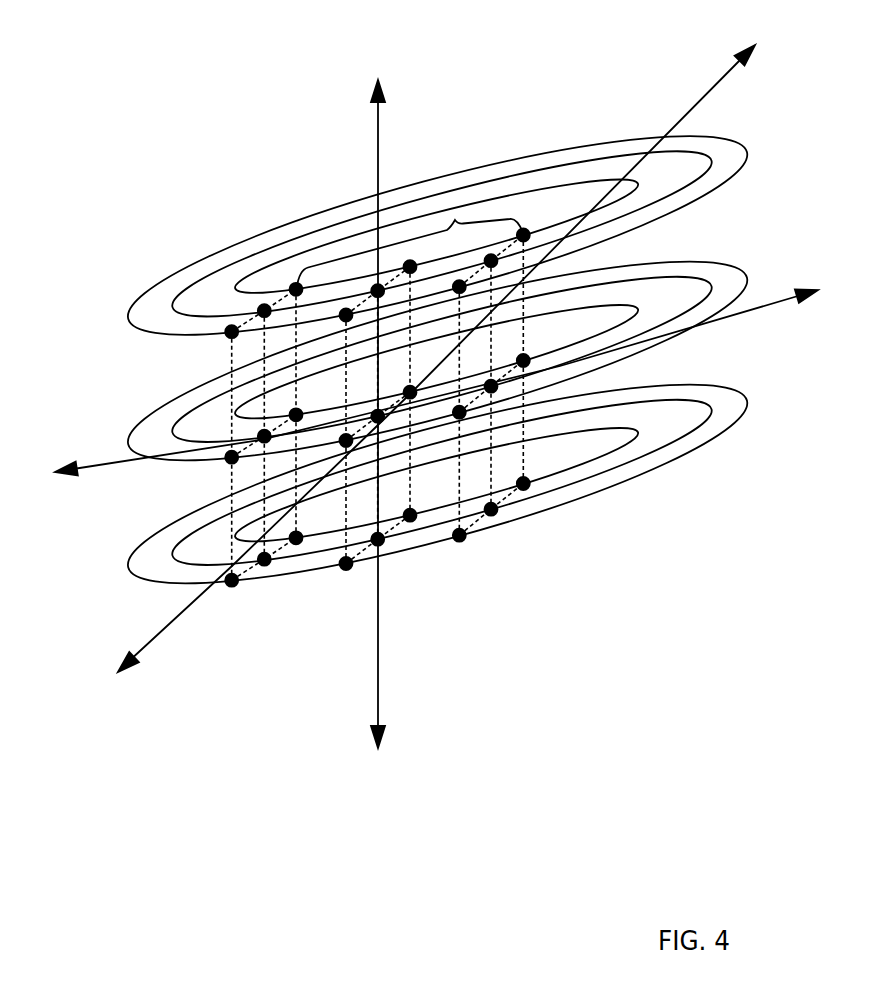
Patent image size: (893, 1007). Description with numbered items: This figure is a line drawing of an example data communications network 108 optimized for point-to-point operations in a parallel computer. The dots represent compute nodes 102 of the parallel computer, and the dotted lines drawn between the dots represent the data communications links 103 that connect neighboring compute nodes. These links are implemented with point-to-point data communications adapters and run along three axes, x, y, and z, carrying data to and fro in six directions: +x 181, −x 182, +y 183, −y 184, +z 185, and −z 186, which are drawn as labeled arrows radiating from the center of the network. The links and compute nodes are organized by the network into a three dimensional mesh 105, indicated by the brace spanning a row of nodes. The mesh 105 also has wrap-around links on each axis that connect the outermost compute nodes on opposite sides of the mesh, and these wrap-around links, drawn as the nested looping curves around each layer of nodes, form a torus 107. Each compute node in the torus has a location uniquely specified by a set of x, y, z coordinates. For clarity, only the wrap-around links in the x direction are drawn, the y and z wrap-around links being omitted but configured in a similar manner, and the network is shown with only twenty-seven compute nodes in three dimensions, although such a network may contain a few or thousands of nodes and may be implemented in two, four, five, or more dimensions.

The compute nodes 102 is at (523, 484).
The data communications links 103 is at (232, 485).
The three dimensional mesh 105 is at (466, 213).
The torus 107 is at (210, 235).
The data communications network 108 is at (338, 973).
The +x direction 181 is at (856, 318).
The −x direction 182 is at (54, 512).
The +y direction 183 is at (796, 68).
The −y direction 184 is at (116, 720).
The +z direction 185 is at (394, 70).
The −z direction 186 is at (398, 808).